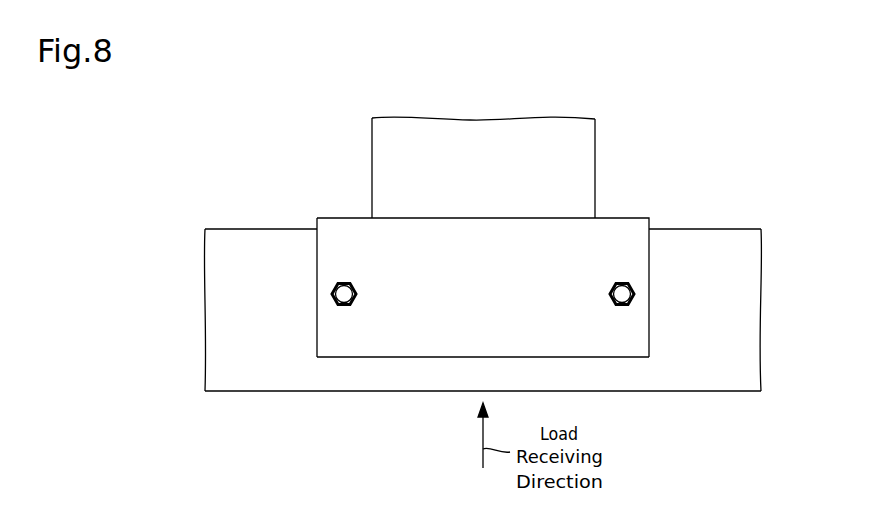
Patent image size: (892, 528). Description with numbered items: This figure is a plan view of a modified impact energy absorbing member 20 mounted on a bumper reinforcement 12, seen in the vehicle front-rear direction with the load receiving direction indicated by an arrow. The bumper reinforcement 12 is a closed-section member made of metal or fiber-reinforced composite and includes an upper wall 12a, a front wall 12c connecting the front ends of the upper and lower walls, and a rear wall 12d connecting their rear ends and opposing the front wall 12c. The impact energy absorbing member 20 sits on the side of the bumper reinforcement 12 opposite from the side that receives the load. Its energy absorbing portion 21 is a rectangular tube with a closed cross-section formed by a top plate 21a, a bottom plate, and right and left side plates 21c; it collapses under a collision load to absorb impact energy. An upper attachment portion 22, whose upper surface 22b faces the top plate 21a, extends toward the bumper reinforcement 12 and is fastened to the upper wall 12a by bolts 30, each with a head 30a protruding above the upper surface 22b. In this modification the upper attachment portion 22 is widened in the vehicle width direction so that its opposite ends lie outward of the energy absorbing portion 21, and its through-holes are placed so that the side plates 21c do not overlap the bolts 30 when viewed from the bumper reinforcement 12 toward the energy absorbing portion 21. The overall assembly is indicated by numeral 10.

The load receiving structure 10 is at (172, 382).
The bumper reinforcement 12 is at (733, 229).
The upper wall 12a is at (750, 314).
The front wall 12c is at (648, 392).
The rear wall 12d is at (233, 229).
The impact energy absorbing member 20 is at (607, 183).
The energy absorbing portion 21 is at (596, 134).
The top plate 21a is at (520, 132).
The side plate 21c is at (372, 141).
The upper attachment portion 22 is at (650, 247).
The upper surface 22b is at (484, 348).
The bolt 30 is at (332, 293).
The head 30a is at (333, 302).